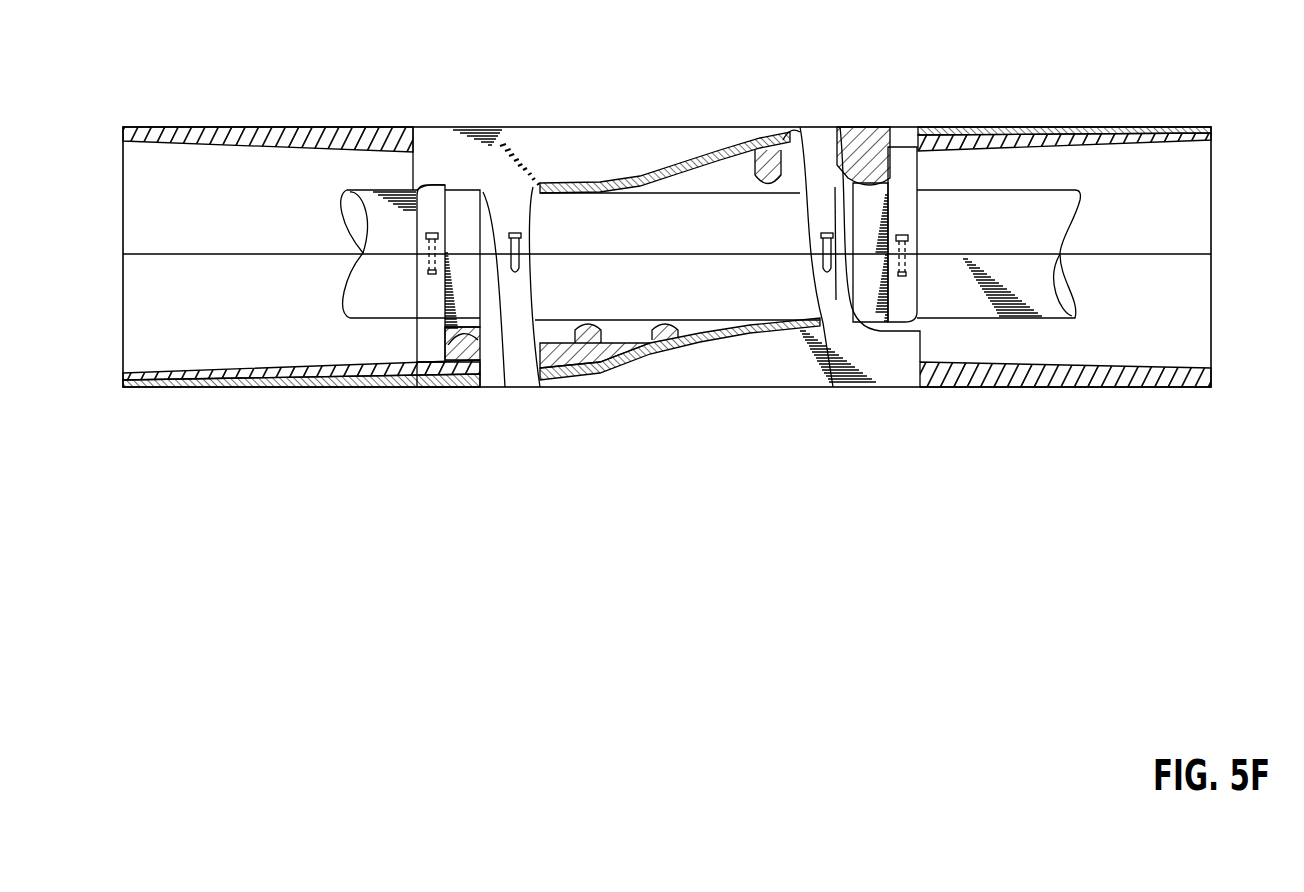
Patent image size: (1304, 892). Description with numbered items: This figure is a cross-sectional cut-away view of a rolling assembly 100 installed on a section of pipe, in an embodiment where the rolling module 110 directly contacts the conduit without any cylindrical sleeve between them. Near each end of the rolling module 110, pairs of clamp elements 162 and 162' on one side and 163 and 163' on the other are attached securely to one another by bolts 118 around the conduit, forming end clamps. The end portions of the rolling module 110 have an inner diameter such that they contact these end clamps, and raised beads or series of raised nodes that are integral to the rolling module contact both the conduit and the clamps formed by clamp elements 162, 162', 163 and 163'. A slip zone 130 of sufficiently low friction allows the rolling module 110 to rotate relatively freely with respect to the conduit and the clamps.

The rolling assembly 100 is at (757, 73).
The rolling module 110 is at (668, 114).
The slip zone 130 is at (628, 330).
The clamp element 162 is at (374, 273).
The clamp element 162' is at (385, 258).
The clamp element 163 is at (942, 211).
The clamp element 163' is at (926, 269).
The bolts 118 is at (905, 236).